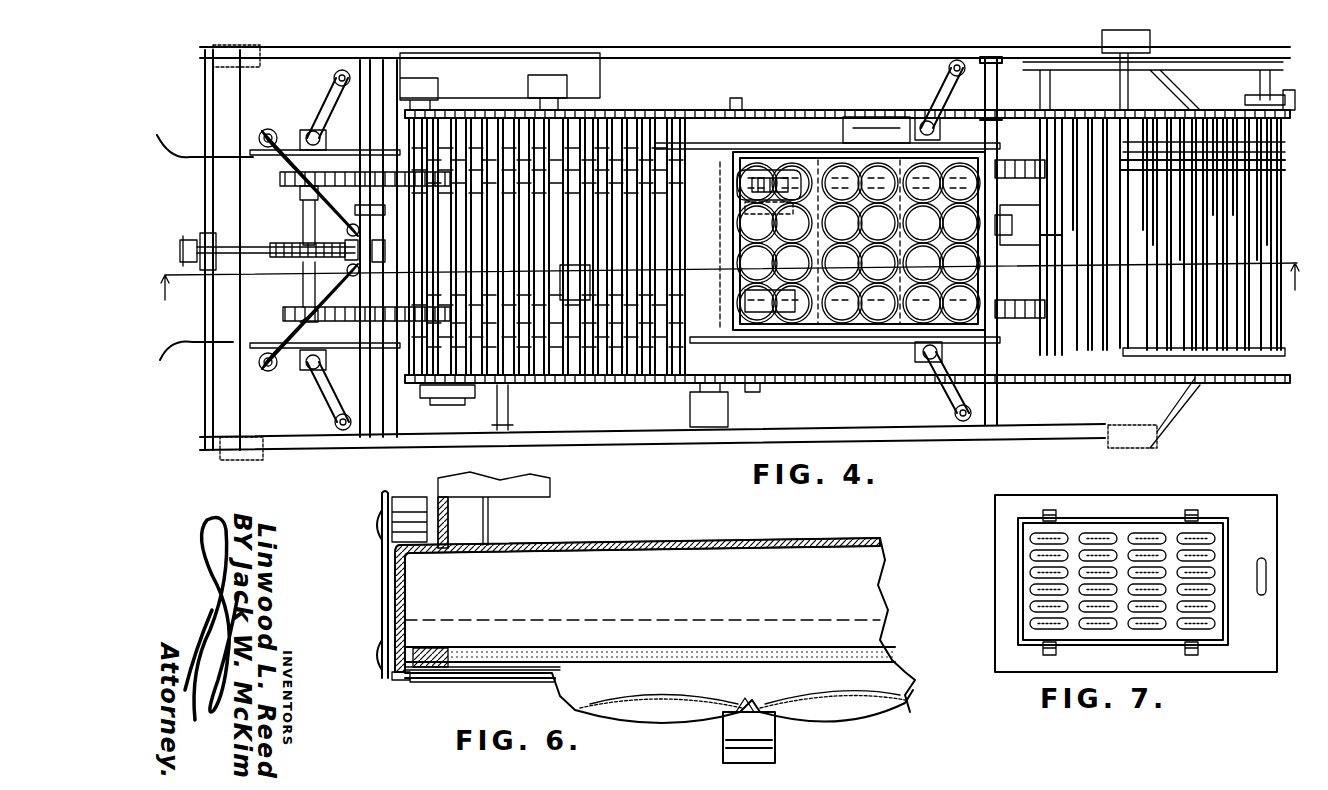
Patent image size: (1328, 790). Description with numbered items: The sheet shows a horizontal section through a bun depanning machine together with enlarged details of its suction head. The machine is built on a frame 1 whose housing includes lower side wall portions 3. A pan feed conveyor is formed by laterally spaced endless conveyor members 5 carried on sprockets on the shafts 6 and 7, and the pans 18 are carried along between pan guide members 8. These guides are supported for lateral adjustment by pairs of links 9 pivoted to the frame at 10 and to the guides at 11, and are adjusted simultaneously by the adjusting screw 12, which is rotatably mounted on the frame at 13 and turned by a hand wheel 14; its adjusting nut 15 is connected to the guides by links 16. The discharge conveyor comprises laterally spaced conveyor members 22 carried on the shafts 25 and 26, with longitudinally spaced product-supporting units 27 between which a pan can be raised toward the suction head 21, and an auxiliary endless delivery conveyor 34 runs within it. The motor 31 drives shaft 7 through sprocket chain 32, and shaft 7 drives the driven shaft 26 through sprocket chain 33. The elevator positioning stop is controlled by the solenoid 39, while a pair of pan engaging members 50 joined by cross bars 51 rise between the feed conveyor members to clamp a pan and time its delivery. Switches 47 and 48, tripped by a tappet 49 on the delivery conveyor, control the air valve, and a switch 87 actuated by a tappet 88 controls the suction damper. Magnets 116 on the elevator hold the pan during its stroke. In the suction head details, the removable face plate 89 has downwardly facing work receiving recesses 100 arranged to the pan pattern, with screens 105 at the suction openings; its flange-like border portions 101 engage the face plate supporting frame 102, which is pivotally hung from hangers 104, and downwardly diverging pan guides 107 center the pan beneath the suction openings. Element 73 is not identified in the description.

In FIG. 4, the frame 1 is at (1150, 446).
In FIG. 4, the lower side wall portions 3 is at (728, 295).
In FIG. 4, the endless conveyor members 5 is at (290, 188).
In FIG. 4, the shaft 6 is at (300, 228).
In FIG. 4, the shaft 7 is at (1040, 128).
In FIG. 4, the pan guide members 8 is at (190, 162).
In FIG. 4, the links 9 is at (325, 108).
In FIG. 4, the pivotal support on frame 10 is at (334, 78).
In FIG. 4, the pivotal connection to guide members 11 is at (320, 138).
In FIG. 4, the adjusting screw 12 is at (258, 254).
In FIG. 4, the rotatable mounting 13 is at (205, 268).
In FIG. 4, the hand wheel 14 is at (183, 244).
In FIG. 4, the adjusting nut 15 is at (335, 260).
In FIG. 4, the links 16 is at (280, 168).
In FIG. 4, the pans 18 is at (735, 241).
In FIG. 6, the suction head 21 is at (398, 605).
In FIG. 4, the conveyor members 22 is at (690, 110).
In FIG. 4, the shaft 25 is at (432, 400).
In FIG. 4, the driven shaft 26 is at (1288, 104).
In FIG. 4, the product-supporting units 27 is at (1235, 198).
In FIG. 4, the motor 31 is at (860, 116).
In FIG. 4, the sprocket chain 32 is at (990, 95).
In FIG. 4, the sprocket chain 33 is at (1188, 64).
In FIG. 4, the auxiliary endless delivery conveyor 34 is at (1127, 272).
In FIG. 4, the solenoid 39 is at (1008, 226).
In FIG. 4, the switch 47 is at (445, 90).
In FIG. 4, the switch 48 is at (572, 88).
In FIG. 4, the switch engaging tappet 49 is at (745, 100).
In FIG. 4, the pan engaging members 50 is at (375, 210).
In FIG. 4, the cross bars 51 is at (655, 282).
In FIG. 6, the chamber 73 is at (585, 568).
In FIG. 4, the switch 87 is at (735, 400).
In FIG. 4, the tappet 88 is at (760, 386).
In FIG. 6, the suction head face plate 89 is at (485, 665).
In FIG. 7, the suction head face plate 89 is at (1005, 645).
In FIG. 6, the work receiving recesses 100 is at (680, 712).
In FIG. 7, the work receiving recesses 100 is at (1208, 625).
In FIG. 6, the flange-like border portions 101 is at (470, 660).
In FIG. 7, the flange-like border portions 101 is at (1030, 505).
In FIG. 6, the face plate supporting frame 102 is at (400, 680).
In FIG. 6, the hangers 104 is at (380, 578).
In FIG. 6, the screens 105 is at (830, 698).
In FIG. 6, the pan guides 107 is at (777, 735).
In FIG. 7, the pan guides 107 is at (1197, 512).
In FIG. 4, the magnets 116 is at (745, 192).